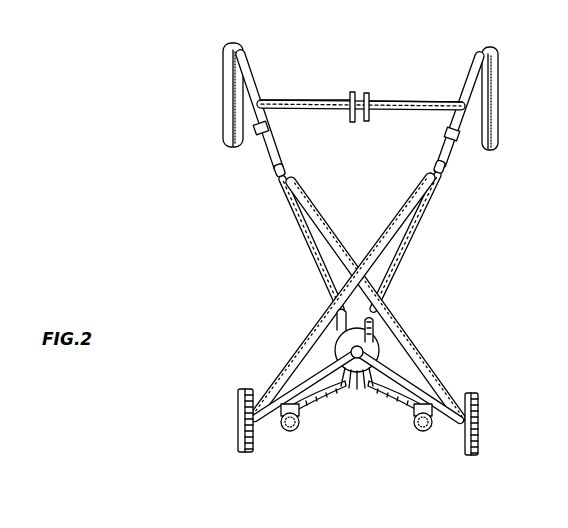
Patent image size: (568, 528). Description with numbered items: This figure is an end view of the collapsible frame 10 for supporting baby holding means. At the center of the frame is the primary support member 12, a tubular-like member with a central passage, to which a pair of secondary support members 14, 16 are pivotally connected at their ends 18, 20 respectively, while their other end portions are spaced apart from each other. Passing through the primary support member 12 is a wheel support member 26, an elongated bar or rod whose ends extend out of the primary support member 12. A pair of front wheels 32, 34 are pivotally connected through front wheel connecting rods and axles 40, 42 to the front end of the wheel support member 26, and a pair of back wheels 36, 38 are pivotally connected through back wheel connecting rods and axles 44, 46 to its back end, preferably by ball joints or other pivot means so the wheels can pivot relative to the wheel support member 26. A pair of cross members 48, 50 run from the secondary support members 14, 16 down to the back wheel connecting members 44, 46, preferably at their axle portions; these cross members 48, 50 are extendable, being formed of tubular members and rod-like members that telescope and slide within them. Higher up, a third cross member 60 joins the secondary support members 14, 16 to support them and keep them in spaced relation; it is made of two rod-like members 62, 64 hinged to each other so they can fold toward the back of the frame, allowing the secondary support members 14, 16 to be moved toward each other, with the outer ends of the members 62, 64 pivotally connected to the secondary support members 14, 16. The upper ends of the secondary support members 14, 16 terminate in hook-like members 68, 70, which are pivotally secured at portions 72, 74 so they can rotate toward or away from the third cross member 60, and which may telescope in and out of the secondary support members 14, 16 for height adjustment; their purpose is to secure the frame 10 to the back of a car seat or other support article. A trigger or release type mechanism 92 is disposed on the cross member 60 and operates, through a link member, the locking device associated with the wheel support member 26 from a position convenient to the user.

The collapsible frame 10 is at (183, 249).
The primary support member 12 is at (354, 393).
The secondary support member 14 is at (268, 169).
The secondary support member 16 is at (445, 170).
The end of secondary support member 18 is at (329, 317).
The end of secondary support member 20 is at (387, 318).
The wheel support member 26 is at (356, 374).
The front wheel 32 is at (287, 432).
The front wheel 34 is at (428, 432).
The back wheel 36 is at (240, 408).
The back wheel 38 is at (480, 405).
The front wheel connecting rod and axle 40 is at (313, 414).
The front wheel connecting rod and axle 42 is at (399, 412).
The back wheel connecting rod and axle 44 is at (267, 420).
The back wheel connecting rod and axle 46 is at (445, 422).
The cross member 48 is at (326, 226).
The cross member 50 is at (417, 196).
The third cross member 60 is at (361, 96).
The rod-like member 62 is at (282, 99).
The rod-like member 64 is at (417, 101).
The hook-like member 68 is at (223, 114).
The hook-like member 70 is at (492, 92).
The portion of secondary support member 72 is at (268, 129).
The portion of secondary support member 74 is at (446, 134).
The release mechanism 92 is at (354, 120).